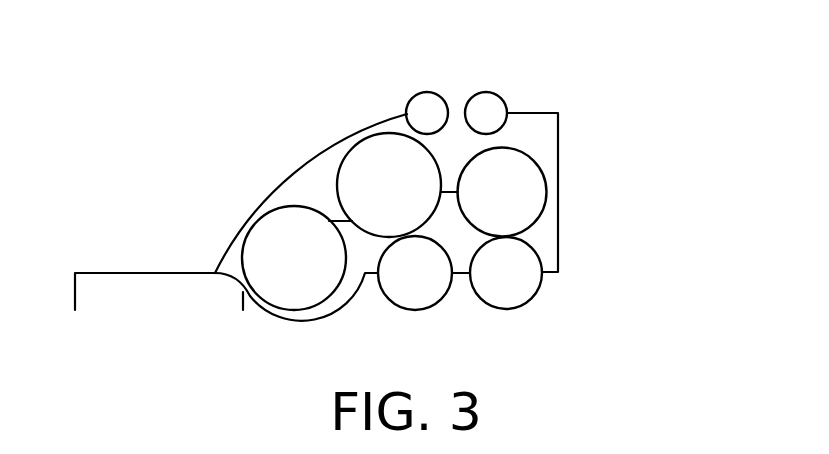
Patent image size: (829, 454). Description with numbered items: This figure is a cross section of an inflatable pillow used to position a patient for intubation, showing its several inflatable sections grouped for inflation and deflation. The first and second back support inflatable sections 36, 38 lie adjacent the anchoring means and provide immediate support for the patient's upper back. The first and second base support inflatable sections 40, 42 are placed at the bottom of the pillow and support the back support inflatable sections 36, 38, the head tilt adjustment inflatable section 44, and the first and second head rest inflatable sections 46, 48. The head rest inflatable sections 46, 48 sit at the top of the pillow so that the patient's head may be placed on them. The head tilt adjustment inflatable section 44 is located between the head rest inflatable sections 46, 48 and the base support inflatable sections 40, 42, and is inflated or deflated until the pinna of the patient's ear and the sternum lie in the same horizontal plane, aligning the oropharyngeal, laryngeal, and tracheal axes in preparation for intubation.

The first back support inflatable section 36 is at (289, 263).
The second back support inflatable section 38 is at (372, 204).
The first base support inflatable section 40 is at (413, 273).
The second base support inflatable section 42 is at (508, 279).
The head tilt adjustment inflatable section 44 is at (517, 190).
The first head rest inflatable section 46 is at (428, 102).
The second head rest inflatable section 48 is at (480, 103).